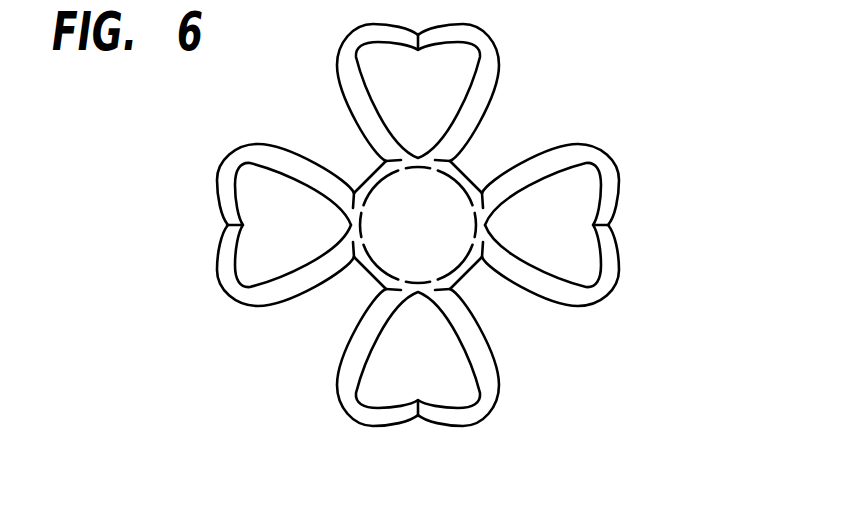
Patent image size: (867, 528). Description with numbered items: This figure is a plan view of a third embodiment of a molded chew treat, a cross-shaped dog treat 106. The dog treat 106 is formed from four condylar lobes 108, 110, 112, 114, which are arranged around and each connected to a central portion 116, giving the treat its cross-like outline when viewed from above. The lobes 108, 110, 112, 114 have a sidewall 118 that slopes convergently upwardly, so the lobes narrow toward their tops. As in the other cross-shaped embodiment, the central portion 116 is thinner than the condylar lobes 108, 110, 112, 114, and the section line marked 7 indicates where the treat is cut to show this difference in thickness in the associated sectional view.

The dog treat 106 is at (583, 260).
The condylar lobe 108 is at (578, 190).
The condylar lobe 110 is at (455, 62).
The condylar lobe 112 is at (261, 190).
The condylar lobe 114 is at (385, 383).
The central portion 116 is at (437, 243).
The sidewall 118 is at (483, 403).
The section line 7- 7 is at (167, 228).